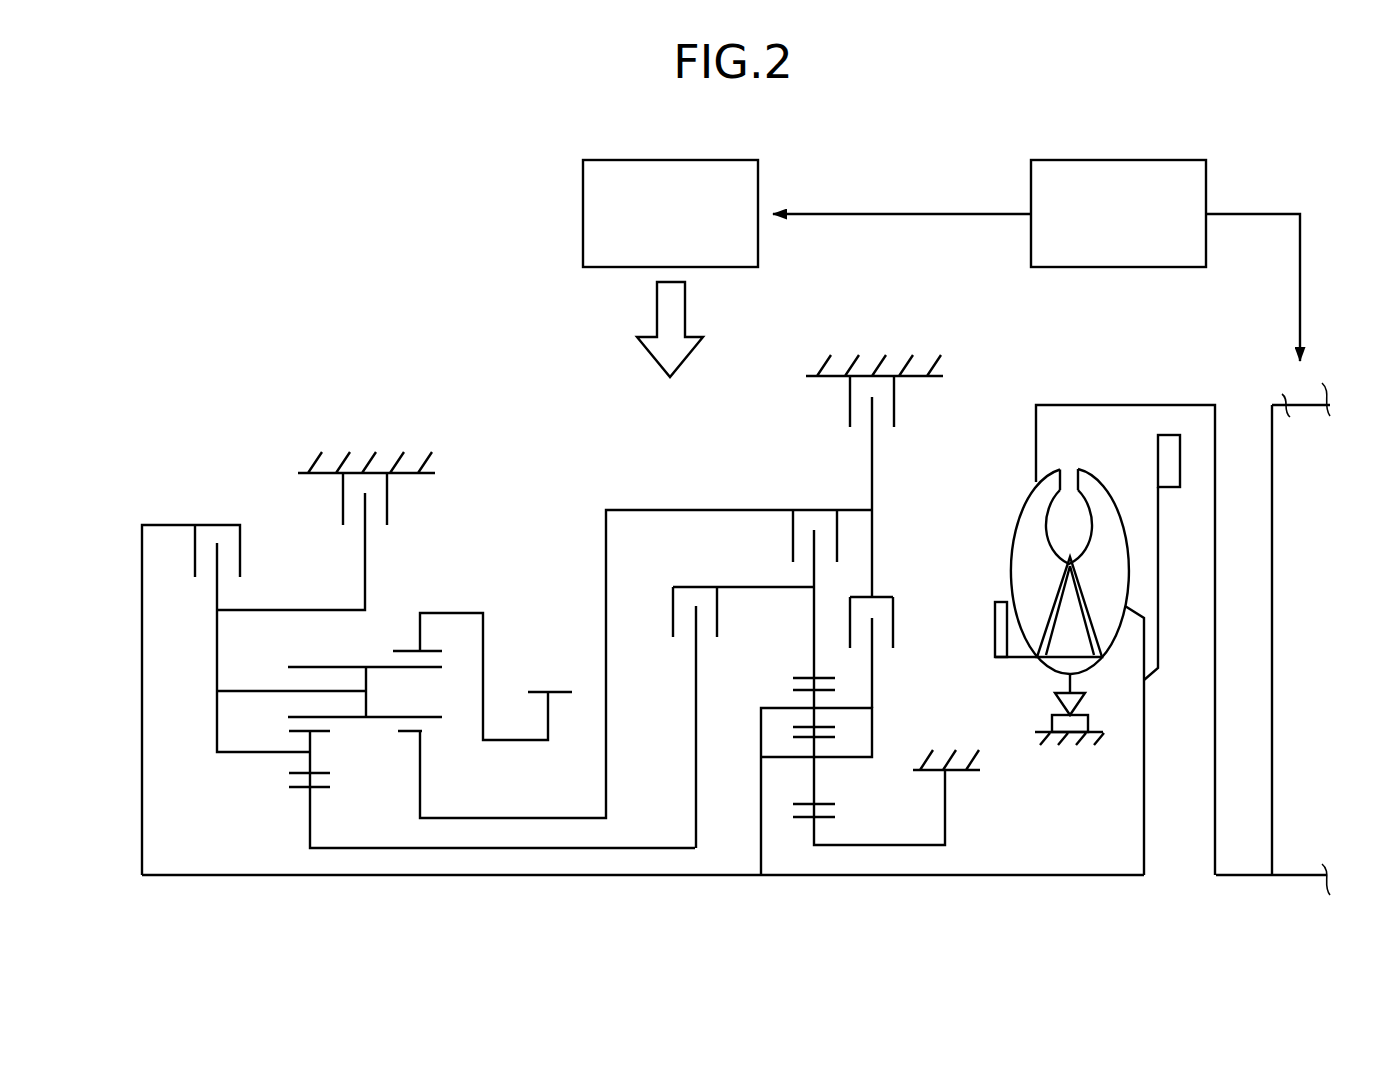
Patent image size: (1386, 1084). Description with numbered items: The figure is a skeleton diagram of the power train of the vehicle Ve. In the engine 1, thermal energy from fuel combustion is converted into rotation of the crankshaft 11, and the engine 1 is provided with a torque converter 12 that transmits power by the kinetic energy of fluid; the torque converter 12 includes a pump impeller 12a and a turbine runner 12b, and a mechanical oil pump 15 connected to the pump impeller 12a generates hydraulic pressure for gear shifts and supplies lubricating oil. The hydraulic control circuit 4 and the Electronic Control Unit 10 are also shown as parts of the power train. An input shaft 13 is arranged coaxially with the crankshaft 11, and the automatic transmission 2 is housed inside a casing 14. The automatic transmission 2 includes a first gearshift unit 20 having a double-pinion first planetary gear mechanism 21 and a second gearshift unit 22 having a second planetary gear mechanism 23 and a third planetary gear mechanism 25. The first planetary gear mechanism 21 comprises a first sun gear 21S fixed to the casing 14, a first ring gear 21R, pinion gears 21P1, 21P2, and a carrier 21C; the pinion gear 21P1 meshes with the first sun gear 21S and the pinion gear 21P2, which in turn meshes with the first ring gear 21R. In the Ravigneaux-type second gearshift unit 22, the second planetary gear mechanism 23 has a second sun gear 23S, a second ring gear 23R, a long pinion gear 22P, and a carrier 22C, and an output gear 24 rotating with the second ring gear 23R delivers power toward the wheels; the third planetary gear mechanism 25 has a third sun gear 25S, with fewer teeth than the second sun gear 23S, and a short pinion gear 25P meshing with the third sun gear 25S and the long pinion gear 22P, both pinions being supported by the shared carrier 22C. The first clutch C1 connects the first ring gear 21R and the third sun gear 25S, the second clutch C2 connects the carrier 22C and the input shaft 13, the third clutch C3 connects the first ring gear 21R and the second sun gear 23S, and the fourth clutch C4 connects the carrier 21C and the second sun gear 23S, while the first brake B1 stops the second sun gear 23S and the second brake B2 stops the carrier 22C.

The engine 1 is at (1286, 414).
The automatic transmission 2 is at (496, 440).
The hydraulic control circuit 4 is at (662, 160).
The Electronic Control Unit (ECU) 10 is at (1108, 160).
The crankshaft 11 is at (1237, 877).
The torque converter 12 is at (1071, 612).
The pump impeller 12a is at (1015, 516).
The turbine runner 12b is at (1108, 490).
The input shaft 13 is at (1040, 877).
The casing 14 is at (337, 460).
The oil pump 15 is at (1000, 601).
The first gearshift unit 20 is at (829, 731).
The first planetary gear mechanism 21 is at (829, 731).
The first ring gear 21R is at (797, 679).
The carrier 21C is at (873, 727).
The first sun gear 21S is at (838, 812).
The pinion gear 21P1 is at (797, 808).
The pinion gear 21P2 is at (797, 688).
The second gearshift unit 22 is at (326, 614).
The long pinion gear 22P is at (304, 666).
The carrier 22C is at (215, 671).
The second planetary gear mechanism 23 is at (608, 671).
The second ring gear 23R is at (407, 652).
The second sun gear 23S is at (437, 736).
The output gear 24 is at (551, 692).
The third planetary gear mechanism 25 is at (423, 697).
The short pinion gear 25P is at (292, 728).
The third sun gear 25S is at (291, 782).
The first clutch C1 is at (669, 667).
The second clutch C2 is at (222, 501).
The third clutch C3 is at (770, 526).
The fourth clutch C4 is at (904, 580).
The first brake B1 is at (815, 404).
The second brake B2 is at (328, 497).
The vehicle Ve is at (458, 255).